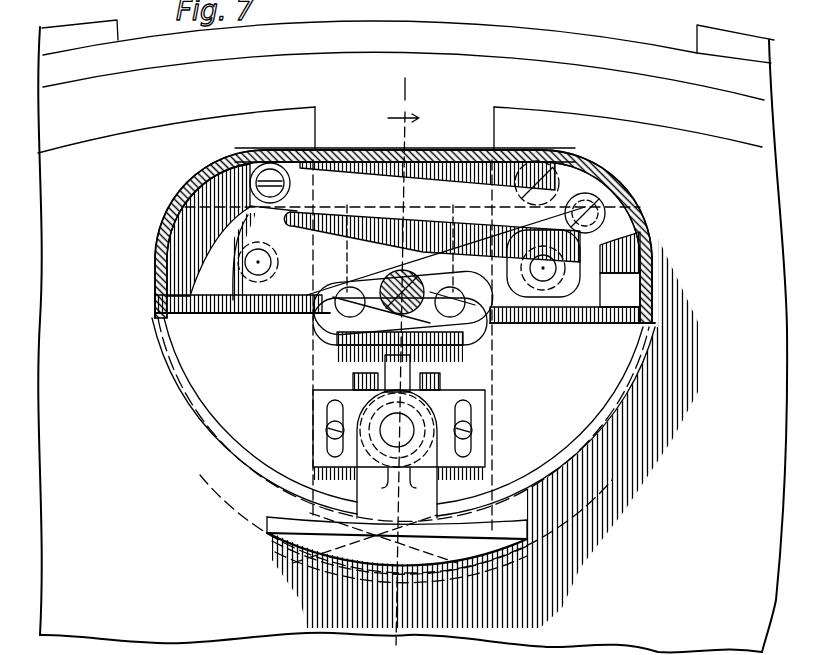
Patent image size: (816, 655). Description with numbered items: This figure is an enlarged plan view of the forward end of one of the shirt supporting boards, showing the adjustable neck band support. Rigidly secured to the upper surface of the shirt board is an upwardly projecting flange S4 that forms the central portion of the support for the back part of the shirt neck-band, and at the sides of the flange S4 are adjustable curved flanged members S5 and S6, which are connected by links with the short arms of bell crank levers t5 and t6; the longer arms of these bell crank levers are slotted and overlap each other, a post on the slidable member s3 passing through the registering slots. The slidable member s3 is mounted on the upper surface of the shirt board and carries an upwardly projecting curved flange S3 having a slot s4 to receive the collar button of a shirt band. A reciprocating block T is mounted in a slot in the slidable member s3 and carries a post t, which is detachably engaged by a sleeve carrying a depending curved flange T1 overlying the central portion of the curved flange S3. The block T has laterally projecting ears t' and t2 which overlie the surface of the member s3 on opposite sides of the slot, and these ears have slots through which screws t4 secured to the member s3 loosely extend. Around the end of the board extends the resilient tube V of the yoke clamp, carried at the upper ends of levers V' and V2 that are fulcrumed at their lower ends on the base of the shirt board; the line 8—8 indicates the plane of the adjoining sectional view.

The resilient tube V is at (404, 82).
The lever V' is at (96, 29).
The lever V2 is at (698, 48).
The section line 8 is at (399, 366).
The adjustable curved flanged member S5 is at (203, 184).
The upwardly projecting flange S4 is at (392, 150).
The adjustable curved flanged member S6 is at (405, 148).
The bell crank lever t6 is at (297, 298).
The bell crank lever t5 is at (512, 300).
The reciprocating block T is at (410, 370).
The ear t' is at (420, 435).
The ear t2 is at (318, 400).
The screws t4 is at (326, 431).
The post t is at (397, 454).
The upwardly projecting curved flange S3 is at (208, 440).
The slidable member s3 is at (277, 453).
The slot s4 is at (300, 562).
The depending curved flange T1 is at (508, 540).